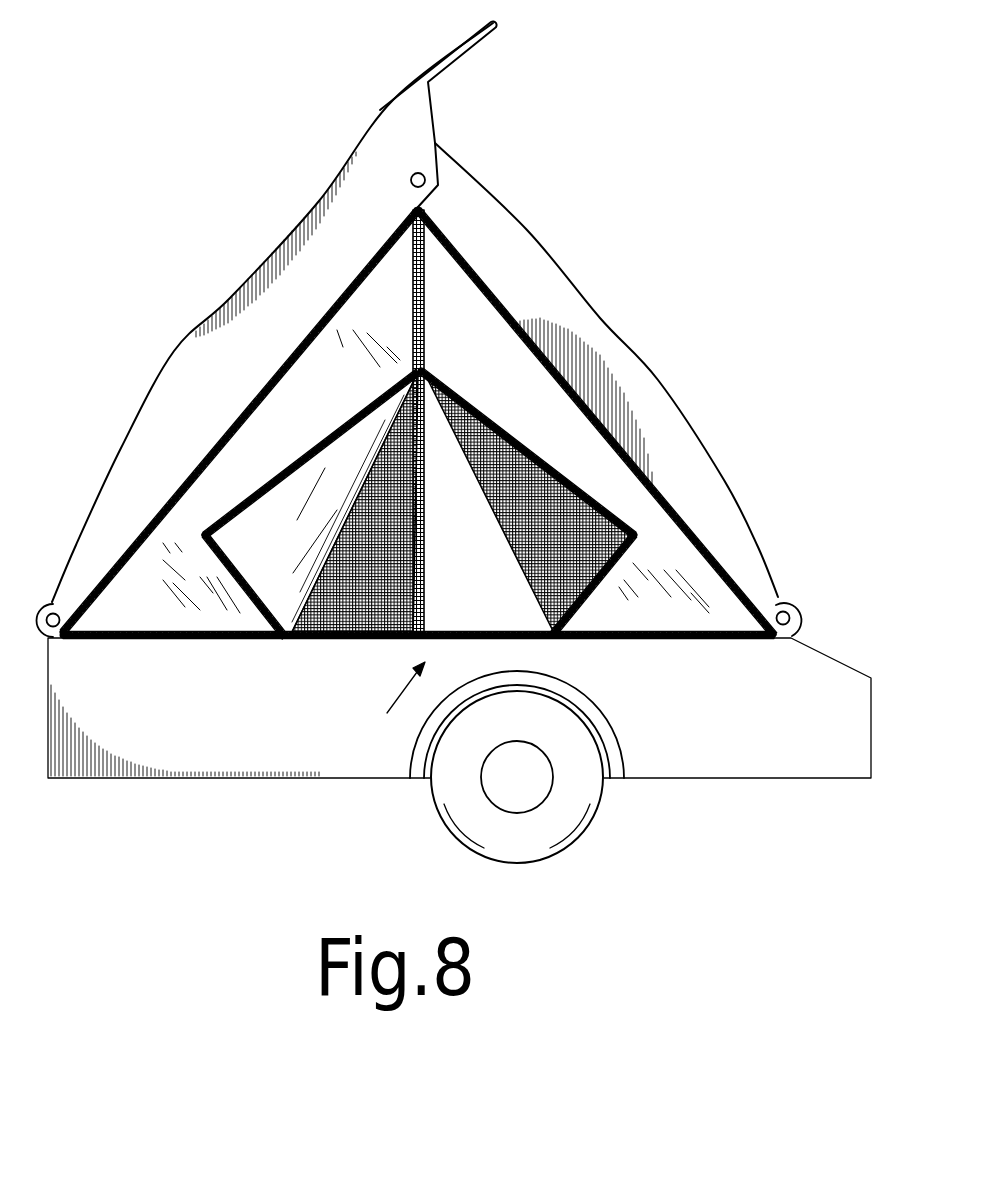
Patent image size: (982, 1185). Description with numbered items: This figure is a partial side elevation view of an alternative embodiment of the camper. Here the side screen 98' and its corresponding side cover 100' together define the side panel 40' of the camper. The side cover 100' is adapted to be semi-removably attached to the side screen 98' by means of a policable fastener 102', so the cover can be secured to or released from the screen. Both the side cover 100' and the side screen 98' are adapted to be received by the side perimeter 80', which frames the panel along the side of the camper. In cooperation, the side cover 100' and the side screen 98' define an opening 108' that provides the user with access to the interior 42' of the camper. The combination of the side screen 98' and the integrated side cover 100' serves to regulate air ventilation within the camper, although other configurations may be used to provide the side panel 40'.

The side panel 40' is at (418, 423).
The interior 42' is at (418, 587).
The side perimeter 80' is at (528, 529).
The side screen 98' is at (353, 539).
The side cover 100' is at (311, 504).
The policable fastener 102' is at (392, 424).
The opening 108' is at (391, 704).